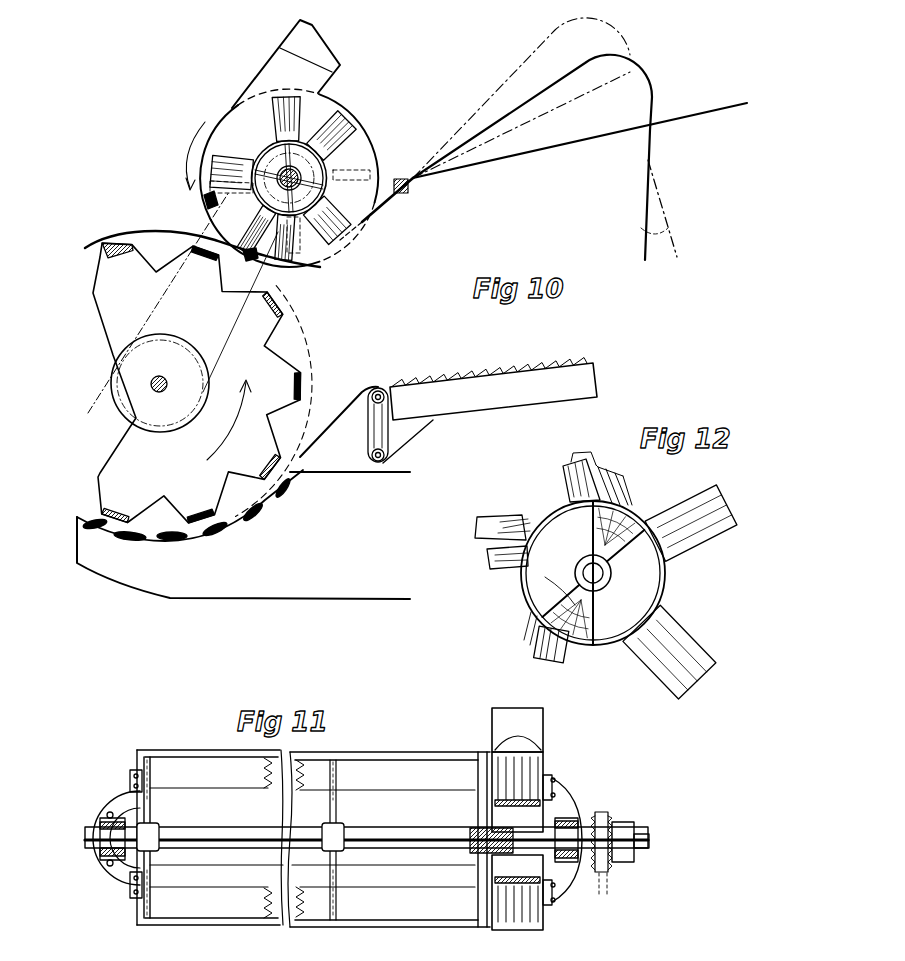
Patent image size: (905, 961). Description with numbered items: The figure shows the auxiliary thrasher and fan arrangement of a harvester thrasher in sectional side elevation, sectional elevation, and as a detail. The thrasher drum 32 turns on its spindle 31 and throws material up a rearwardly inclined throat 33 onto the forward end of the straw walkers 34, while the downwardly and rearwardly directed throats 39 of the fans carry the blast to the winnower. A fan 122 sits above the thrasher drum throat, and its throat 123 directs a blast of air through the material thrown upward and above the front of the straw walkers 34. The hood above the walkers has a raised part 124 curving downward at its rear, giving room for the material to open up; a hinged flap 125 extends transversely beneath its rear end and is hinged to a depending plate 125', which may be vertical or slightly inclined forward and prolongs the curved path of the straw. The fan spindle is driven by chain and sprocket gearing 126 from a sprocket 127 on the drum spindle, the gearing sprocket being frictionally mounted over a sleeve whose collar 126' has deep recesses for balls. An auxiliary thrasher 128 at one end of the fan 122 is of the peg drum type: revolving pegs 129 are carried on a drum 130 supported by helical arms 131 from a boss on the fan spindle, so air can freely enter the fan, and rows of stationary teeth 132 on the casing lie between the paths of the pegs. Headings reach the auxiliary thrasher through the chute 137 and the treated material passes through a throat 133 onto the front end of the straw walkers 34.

In FIG. 10, the spindle 31 is at (166, 385).
In FIG. 10, the thrasher drum 32 is at (202, 239).
In FIG. 10, the rearwardly inclined throat 33 is at (342, 400).
In FIG. 10, the straw walkers 34 is at (493, 389).
In FIG. 10, the throats 39 is at (243, 534).
In FIG. 11, the fan 122 is at (313, 838).
In FIG. 10, the throat 123 is at (378, 201).
In FIG. 11, the throat 123 is at (366, 854).
In FIG. 10, the raised part 124 is at (526, 90).
In FIG. 10, the hinged flap 125 is at (635, 208).
In FIG. 10, the plate 125' is at (682, 154).
In FIG. 10, the chain and sprocket gearing 126 is at (183, 302).
In FIG. 11, the chain and sprocket gearing 126 is at (352, 847).
In FIG. 11, the collar 126' is at (612, 824).
In FIG. 10, the sprocket 127 is at (128, 400).
In FIG. 10, the auxiliary thrasher 128 is at (282, 178).
In FIG. 11, the auxiliary thrasher 128 is at (532, 753).
In FIG. 12, the revolving pegs 129 is at (697, 553).
In FIG. 10, the drum 130 is at (325, 137).
In FIG. 12, the drum 130 is at (598, 645).
In FIG. 12, the helical arms 131 is at (603, 525).
In FIG. 10, the stationary teeth 132 is at (205, 194).
In FIG. 10, the throat 133 is at (365, 220).
In FIG. 11, the throat 133 is at (518, 913).
In FIG. 10, the chute 137 is at (325, 60).
In FIG. 11, the chute 137 is at (530, 725).